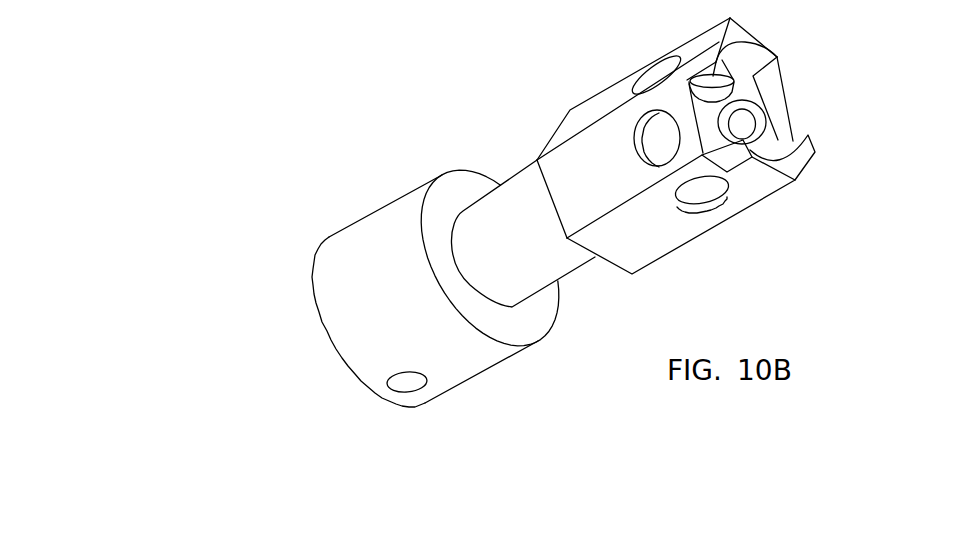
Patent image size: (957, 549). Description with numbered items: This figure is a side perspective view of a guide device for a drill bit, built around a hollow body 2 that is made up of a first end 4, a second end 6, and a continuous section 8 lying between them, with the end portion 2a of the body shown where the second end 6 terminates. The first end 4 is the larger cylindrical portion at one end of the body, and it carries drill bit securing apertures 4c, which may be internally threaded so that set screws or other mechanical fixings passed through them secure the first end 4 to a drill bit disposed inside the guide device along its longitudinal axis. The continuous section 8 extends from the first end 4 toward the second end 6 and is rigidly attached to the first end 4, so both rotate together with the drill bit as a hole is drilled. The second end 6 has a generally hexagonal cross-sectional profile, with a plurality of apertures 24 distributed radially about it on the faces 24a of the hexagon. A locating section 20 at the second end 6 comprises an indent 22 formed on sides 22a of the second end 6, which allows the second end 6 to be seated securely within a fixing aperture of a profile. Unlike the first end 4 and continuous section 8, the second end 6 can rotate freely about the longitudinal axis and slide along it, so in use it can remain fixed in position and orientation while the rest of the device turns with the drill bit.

The hollow body 2 is at (596, 260).
The shaft end portion 2a is at (790, 110).
The first end 4 is at (482, 374).
The drill bit securing apertures 4c is at (407, 384).
The second end 6 is at (702, 236).
The continuous section 8 is at (539, 182).
The locating section 20 is at (812, 150).
The indent 22 is at (773, 94).
The sides 22a is at (743, 158).
The apertures 24 is at (649, 82).
The faces 24a is at (588, 113).